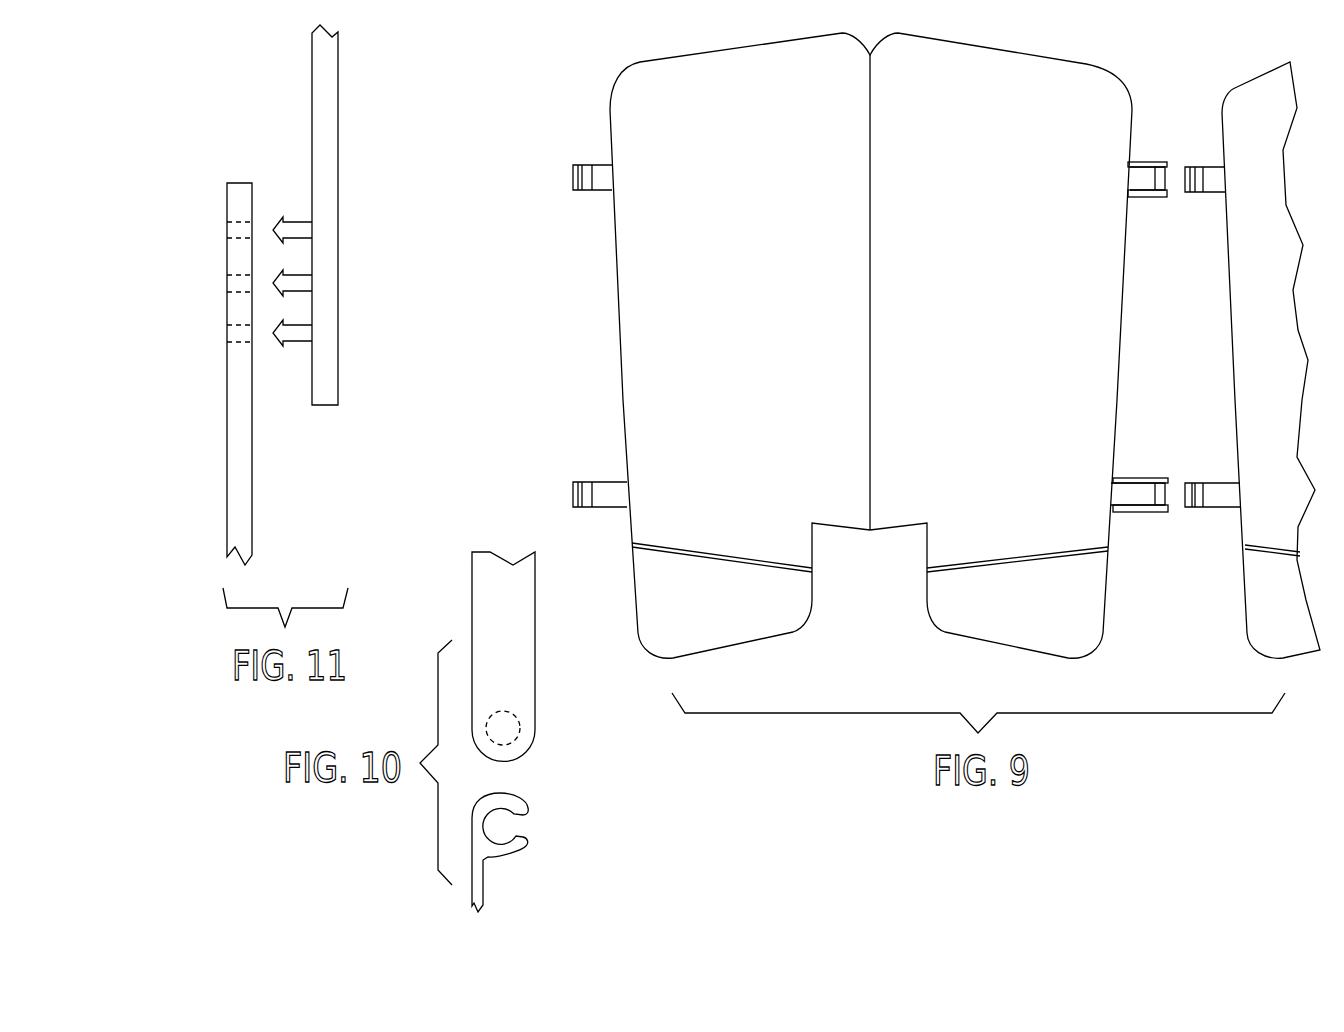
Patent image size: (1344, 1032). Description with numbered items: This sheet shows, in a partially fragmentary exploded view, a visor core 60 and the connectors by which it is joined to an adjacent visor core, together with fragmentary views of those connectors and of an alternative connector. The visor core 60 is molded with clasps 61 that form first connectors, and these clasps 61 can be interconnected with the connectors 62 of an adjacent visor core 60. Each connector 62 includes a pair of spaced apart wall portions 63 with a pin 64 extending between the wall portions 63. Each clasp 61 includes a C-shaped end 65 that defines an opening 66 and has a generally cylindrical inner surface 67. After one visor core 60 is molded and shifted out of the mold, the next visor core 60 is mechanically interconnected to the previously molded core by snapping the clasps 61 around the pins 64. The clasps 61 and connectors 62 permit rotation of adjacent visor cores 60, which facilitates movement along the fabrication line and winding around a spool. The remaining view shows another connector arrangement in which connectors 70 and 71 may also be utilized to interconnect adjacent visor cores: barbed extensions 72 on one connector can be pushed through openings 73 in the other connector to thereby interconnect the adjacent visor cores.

In FIG. 9, the visor core 60 is at (1083, 55).
In FIG. 9, the clasps 61 is at (580, 165).
In FIG. 10, the clasps 61 is at (536, 851).
In FIG. 9, the connectors 62 is at (1161, 342).
In FIG. 10, the connectors 62 is at (537, 656).
In FIG. 9, the wall portions 63 is at (1143, 162).
In FIG. 10, the wall portions 63 is at (520, 580).
In FIG. 9, the pin 64 is at (1160, 180).
In FIG. 10, the pin 64 is at (520, 728).
In FIG. 10, the C-shaped end 65 is at (525, 803).
In FIG. 10, the opening 66 is at (558, 861).
In FIG. 10, the inner surface 67 is at (510, 823).
In FIG. 11, the connector 70 is at (208, 338).
In FIG. 11, the connector 71 is at (351, 302).
In FIG. 11, the barbed extensions 72 is at (278, 272).
In FIG. 11, the openings 73 is at (230, 333).